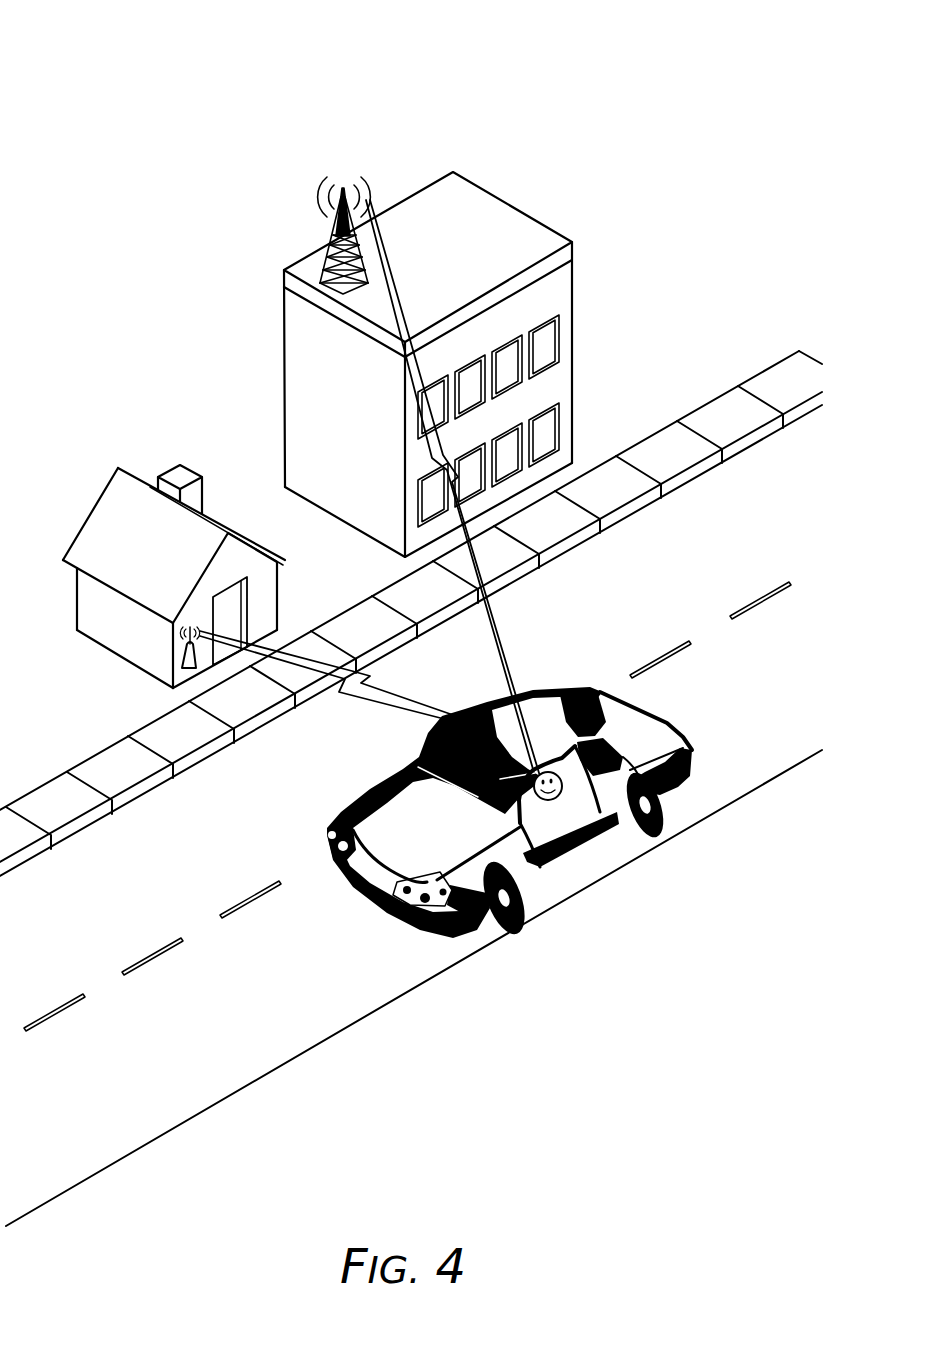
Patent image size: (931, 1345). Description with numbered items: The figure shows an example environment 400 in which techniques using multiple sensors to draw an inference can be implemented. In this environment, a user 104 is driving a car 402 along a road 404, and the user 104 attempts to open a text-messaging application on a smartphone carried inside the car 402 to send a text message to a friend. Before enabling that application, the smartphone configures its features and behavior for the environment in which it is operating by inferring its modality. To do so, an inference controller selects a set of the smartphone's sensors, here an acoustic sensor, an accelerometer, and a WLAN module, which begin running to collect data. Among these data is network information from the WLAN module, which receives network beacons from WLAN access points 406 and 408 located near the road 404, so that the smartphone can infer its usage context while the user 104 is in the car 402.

The example environment 400 is at (101, 40).
The car 402 is at (540, 806).
The road 404 is at (171, 1072).
The WLAN access point 406 is at (331, 222).
The WLAN access point 408 is at (176, 645).
The user 104 is at (561, 816).